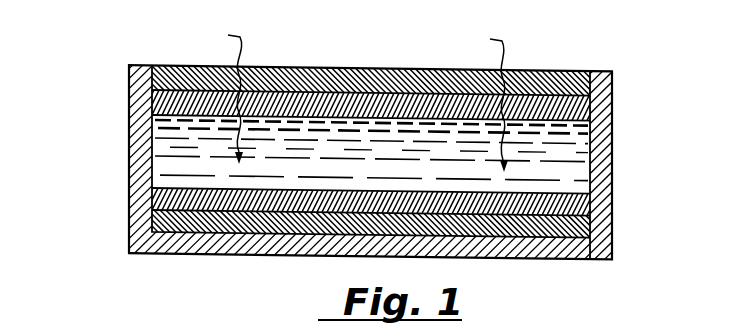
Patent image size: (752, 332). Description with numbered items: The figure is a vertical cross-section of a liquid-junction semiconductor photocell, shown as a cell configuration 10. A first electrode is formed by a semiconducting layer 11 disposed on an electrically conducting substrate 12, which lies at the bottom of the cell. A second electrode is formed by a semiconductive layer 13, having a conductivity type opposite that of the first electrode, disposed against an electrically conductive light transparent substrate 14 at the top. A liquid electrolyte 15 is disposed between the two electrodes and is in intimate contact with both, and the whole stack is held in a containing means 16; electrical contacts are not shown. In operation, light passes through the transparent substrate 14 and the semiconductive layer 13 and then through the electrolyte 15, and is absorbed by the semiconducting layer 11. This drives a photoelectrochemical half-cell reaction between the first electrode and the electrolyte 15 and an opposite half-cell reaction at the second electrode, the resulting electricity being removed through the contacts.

The cell configuration 10 is at (121, 141).
The semiconducting layer 11 is at (577, 203).
The electrically conducting substrate 12 is at (582, 228).
The semiconductive layer 13 is at (578, 108).
The electrically conductive light transparent substrate 14 is at (552, 82).
The liquid electrolyte 15 is at (573, 163).
The containing means 16 is at (588, 248).